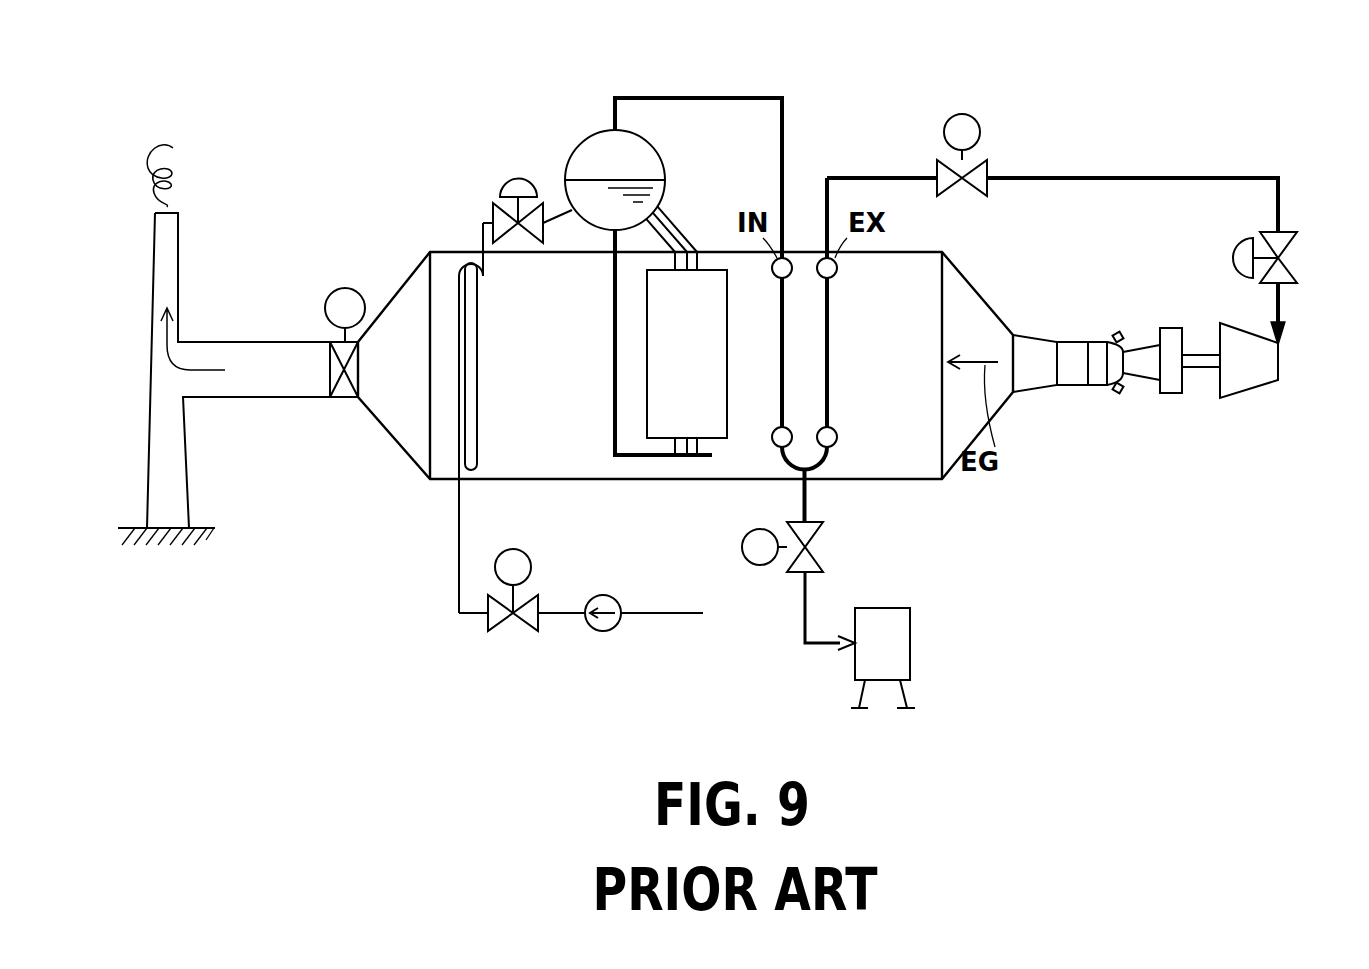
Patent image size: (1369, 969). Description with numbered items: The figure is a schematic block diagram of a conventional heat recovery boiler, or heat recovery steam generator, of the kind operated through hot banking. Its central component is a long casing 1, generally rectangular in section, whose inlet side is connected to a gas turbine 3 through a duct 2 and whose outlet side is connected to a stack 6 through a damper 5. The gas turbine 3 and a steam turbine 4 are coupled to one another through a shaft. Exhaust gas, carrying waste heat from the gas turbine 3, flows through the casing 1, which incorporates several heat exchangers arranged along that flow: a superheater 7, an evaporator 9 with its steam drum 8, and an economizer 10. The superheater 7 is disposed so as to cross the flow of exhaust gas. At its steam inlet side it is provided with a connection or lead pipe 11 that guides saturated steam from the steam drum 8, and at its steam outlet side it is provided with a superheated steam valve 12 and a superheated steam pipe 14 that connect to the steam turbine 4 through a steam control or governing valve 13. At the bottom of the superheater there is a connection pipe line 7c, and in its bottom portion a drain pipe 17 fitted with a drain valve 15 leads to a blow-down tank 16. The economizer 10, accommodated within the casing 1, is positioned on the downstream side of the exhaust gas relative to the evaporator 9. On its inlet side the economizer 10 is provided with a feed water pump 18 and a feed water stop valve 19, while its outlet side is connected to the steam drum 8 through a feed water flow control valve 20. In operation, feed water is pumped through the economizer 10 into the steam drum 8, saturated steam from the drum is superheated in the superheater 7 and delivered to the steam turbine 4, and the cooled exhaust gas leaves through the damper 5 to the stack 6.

The casing 1 is at (920, 479).
The duct 2 is at (1040, 392).
The gas turbine 3 is at (1107, 390).
The steam turbine 4 is at (1250, 400).
The damper 5 is at (343, 397).
The stack 6 is at (183, 277).
The superheater 7 is at (829, 357).
The connection pipe line 7c is at (830, 455).
The steam drum 8 is at (662, 157).
The evaporator 9 is at (727, 357).
The economizer 10 is at (483, 357).
The connection pipe 11 is at (747, 98).
The superheated steam valve 12 is at (975, 120).
The steam control valve 13 is at (1297, 258).
The superheated steam pipe 14 is at (1140, 177).
The drain valve 15 is at (823, 547).
The blow-down tank 16 is at (910, 640).
The drain pipe 17 is at (813, 650).
The feed water pump 18 is at (603, 631).
The feed water stop valve 19 is at (513, 631).
The feed water flow control valve 20 is at (518, 182).